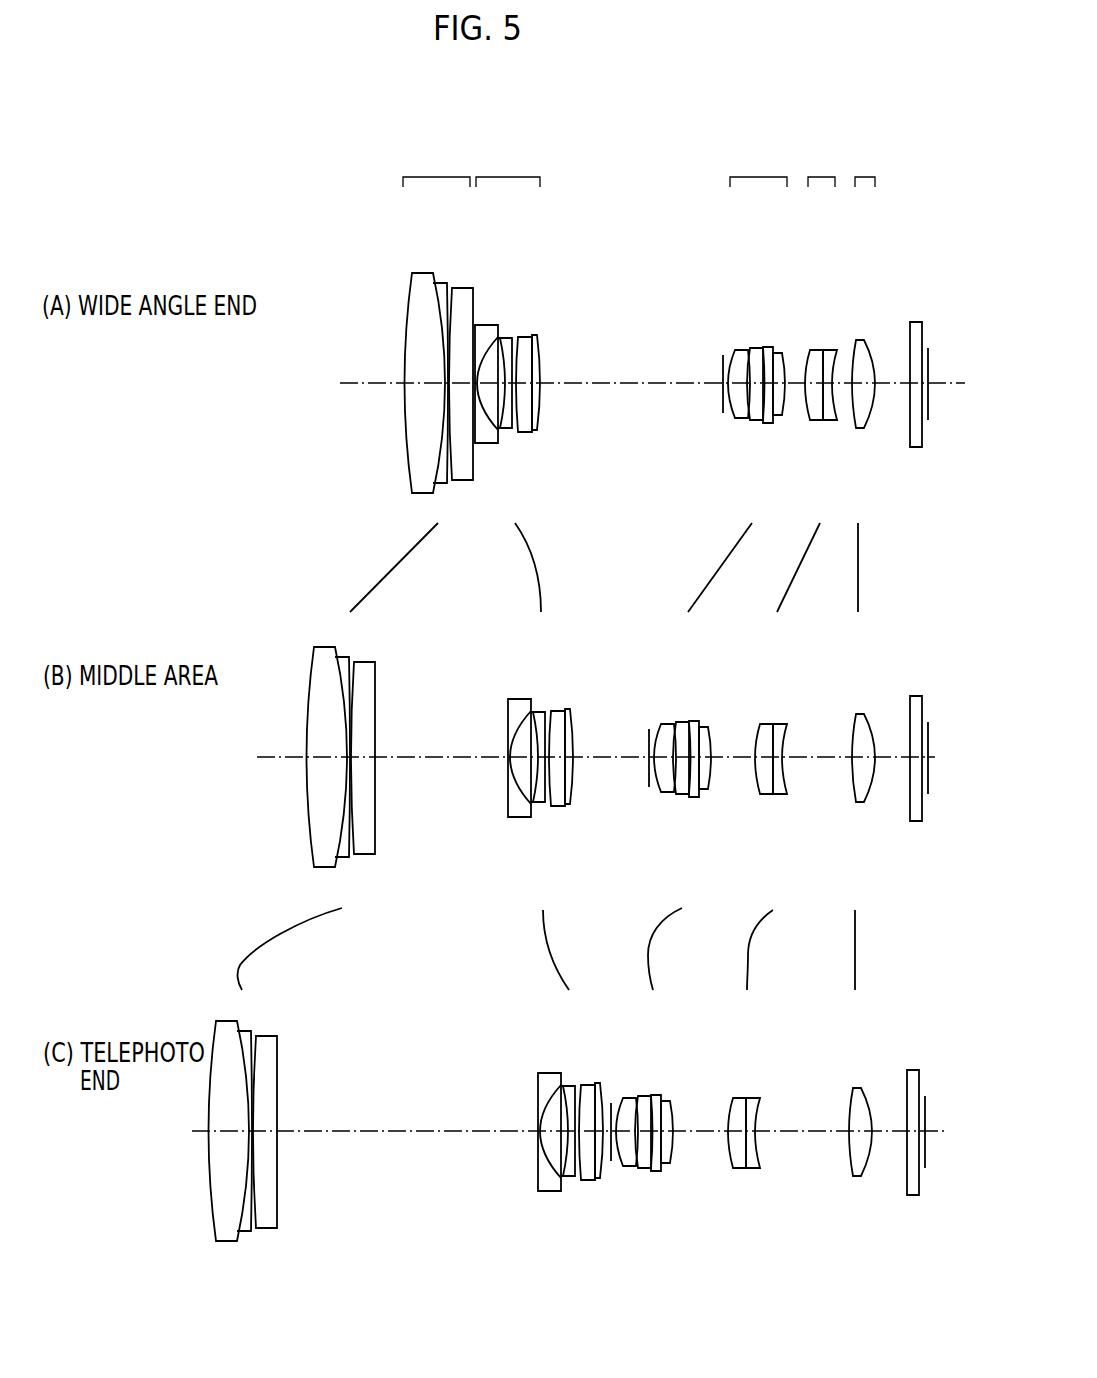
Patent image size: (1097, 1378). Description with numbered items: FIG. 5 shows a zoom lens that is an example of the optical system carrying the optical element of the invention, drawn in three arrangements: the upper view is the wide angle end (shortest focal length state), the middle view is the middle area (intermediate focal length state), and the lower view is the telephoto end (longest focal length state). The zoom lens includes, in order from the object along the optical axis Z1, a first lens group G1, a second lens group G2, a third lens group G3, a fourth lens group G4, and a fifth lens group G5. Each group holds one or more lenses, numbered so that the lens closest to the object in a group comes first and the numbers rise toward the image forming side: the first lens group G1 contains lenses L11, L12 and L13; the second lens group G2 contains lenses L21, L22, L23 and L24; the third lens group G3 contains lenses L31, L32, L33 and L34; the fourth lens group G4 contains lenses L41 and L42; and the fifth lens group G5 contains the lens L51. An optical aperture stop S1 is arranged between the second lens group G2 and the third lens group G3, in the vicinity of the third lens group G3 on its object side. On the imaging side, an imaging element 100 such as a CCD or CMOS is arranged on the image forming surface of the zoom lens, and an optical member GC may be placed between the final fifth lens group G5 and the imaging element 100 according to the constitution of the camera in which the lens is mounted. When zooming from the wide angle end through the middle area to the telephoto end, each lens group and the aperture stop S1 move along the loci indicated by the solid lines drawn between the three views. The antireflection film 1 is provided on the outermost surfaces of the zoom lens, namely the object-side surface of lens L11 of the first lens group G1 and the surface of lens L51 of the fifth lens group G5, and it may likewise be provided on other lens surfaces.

The antireflection film 1 is at (407, 317).
The first lens group G1 is at (436, 164).
The second lens group G2 is at (508, 164).
The third lens group G3 is at (758, 164).
The fourth lens group G4 is at (821, 164).
The fifth lens group G5 is at (865, 164).
The lens L11 is at (422, 273).
The lens L12 is at (438, 283).
The lens L13 is at (465, 290).
The lens L21 is at (487, 325).
The lens L22 is at (503, 337).
The lens L23 is at (525, 335).
The lens L24 is at (533, 337).
The lens L31 is at (742, 348).
The lens L32 is at (758, 347).
The lens L33 is at (768, 347).
The lens L34 is at (780, 353).
The lens L41 is at (818, 348).
The lens L42 is at (832, 347).
The lens L51 is at (860, 340).
The aperture stop S1 is at (720, 370).
The optical member GC is at (915, 322).
The imaging element 100 is at (928, 352).
The optical axis Z1 is at (356, 391).